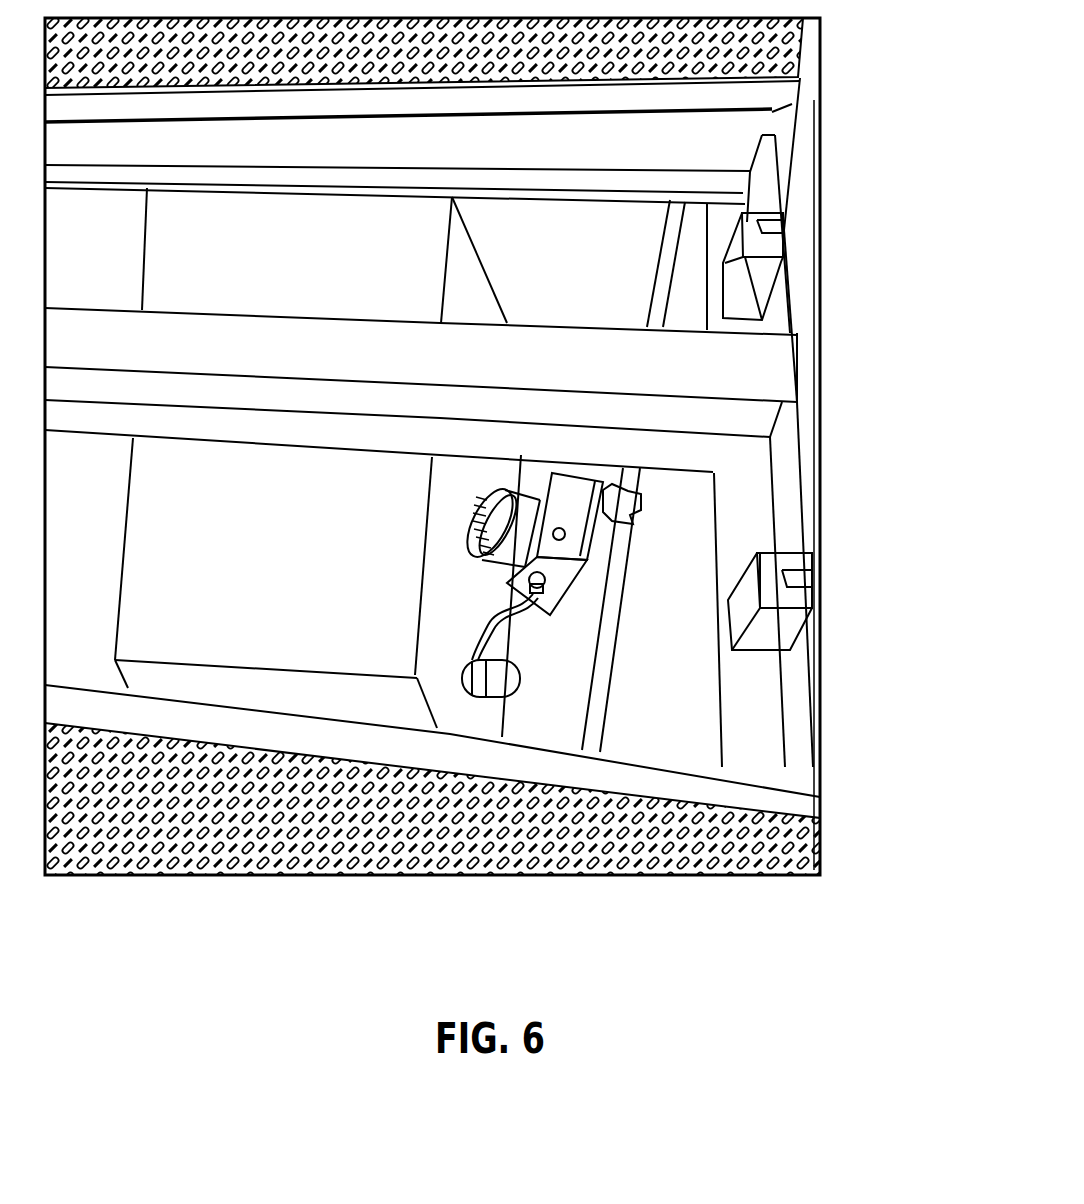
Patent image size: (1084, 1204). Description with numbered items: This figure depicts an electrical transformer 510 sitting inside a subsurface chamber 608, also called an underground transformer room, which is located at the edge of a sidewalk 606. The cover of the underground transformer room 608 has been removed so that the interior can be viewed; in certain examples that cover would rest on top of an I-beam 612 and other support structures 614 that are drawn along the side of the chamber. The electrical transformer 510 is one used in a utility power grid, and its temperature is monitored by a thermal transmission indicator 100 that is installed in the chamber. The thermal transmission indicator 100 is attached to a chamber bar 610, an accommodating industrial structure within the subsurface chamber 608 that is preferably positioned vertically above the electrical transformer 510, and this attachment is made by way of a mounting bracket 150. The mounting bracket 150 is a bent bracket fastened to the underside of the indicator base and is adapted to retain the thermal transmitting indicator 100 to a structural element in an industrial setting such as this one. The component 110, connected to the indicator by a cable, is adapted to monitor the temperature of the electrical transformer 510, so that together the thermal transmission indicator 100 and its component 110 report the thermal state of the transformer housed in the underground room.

The sidewalk 606 is at (432, 446).
The subsurface chamber 608 is at (604, 278).
The electrical transformer 510 is at (282, 556).
The I-beam 612 is at (685, 360).
The mounting bracket 150 is at (640, 510).
The chamber bar 610 is at (622, 600).
The support structure 614 is at (765, 630).
The thermal transmission indicator 100 is at (563, 553).
The thermal transmission indicator component 110 is at (462, 682).